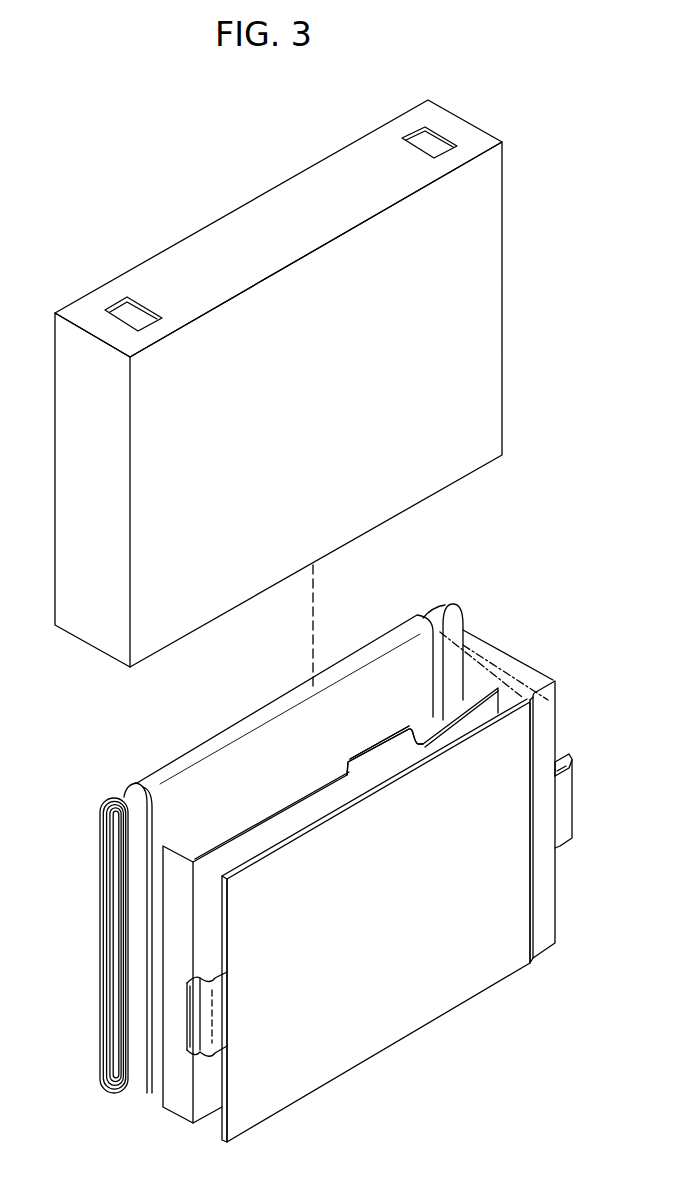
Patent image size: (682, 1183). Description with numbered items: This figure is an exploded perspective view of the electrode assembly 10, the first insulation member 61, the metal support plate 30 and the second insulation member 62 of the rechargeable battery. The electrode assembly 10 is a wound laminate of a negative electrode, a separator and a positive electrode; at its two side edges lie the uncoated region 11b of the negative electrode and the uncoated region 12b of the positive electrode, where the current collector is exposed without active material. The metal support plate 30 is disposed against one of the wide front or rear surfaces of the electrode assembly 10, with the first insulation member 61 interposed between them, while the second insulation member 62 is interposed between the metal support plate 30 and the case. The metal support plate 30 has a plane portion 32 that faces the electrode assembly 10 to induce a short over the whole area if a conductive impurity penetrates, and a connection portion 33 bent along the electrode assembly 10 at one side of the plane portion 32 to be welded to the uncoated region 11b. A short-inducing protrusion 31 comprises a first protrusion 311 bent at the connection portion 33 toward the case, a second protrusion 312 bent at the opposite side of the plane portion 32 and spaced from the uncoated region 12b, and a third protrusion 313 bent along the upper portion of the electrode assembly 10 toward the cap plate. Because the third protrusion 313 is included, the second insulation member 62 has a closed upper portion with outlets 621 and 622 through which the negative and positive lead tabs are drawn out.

The electrode assembly 10 is at (233, 718).
The uncoated region of the negative electrode 11b is at (448, 603).
The uncoated region of the positive electrode 12b is at (119, 797).
The metal support plate 30 is at (488, 994).
The protrusion 31 is at (636, 490).
The first protrusion 311 is at (563, 827).
The second protrusion 312 is at (196, 1014).
The third protrusion 313 is at (385, 752).
The plane portion 32 is at (393, 1014).
The connection portion 33 is at (548, 707).
The first insulation member 61 is at (208, 1092).
The second insulation member 62 is at (462, 330).
The outlet 621 is at (432, 147).
The outlet 622 is at (121, 312).